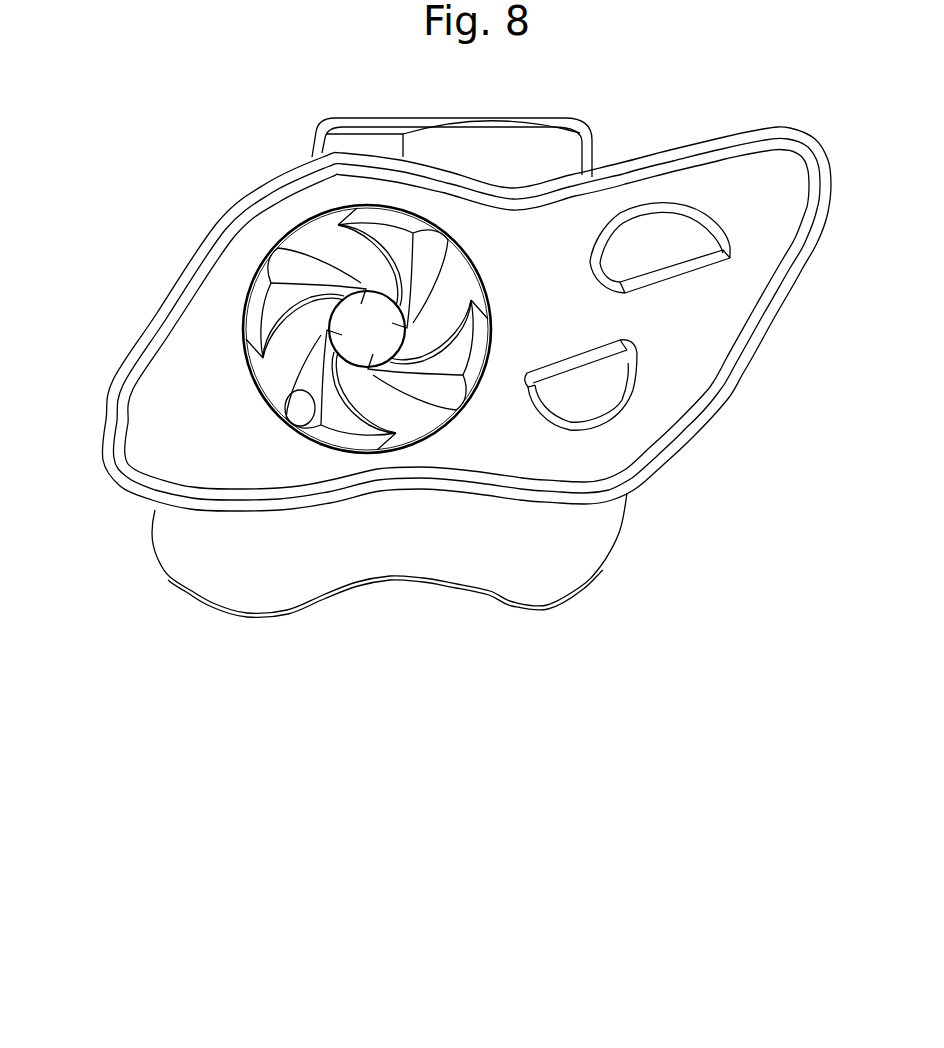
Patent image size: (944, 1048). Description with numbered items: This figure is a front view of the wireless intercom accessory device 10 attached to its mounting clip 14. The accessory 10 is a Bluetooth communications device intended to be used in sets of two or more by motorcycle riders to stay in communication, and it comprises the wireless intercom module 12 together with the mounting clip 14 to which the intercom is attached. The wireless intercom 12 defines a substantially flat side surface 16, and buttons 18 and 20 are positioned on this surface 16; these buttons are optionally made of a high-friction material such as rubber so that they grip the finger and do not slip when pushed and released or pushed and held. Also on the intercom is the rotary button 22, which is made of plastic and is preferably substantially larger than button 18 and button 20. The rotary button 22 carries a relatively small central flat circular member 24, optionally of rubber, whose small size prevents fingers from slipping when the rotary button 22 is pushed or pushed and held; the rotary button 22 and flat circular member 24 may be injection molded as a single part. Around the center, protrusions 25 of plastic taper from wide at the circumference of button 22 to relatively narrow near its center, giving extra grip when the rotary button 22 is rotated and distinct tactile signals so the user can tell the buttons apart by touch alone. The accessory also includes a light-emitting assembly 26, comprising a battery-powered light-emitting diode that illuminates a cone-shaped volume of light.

The wireless intercom accessory device 10 is at (575, 693).
The wireless intercom module 12 is at (218, 224).
The mounting clip 14 is at (193, 587).
The flat side surface 16 is at (205, 310).
The button 18 is at (700, 232).
The button 20 is at (610, 377).
The rotary button 22 is at (397, 403).
The central flat circular member 24 is at (462, 260).
The protrusions 25 is at (463, 284).
The light-emitting assembly 26 is at (100, 462).